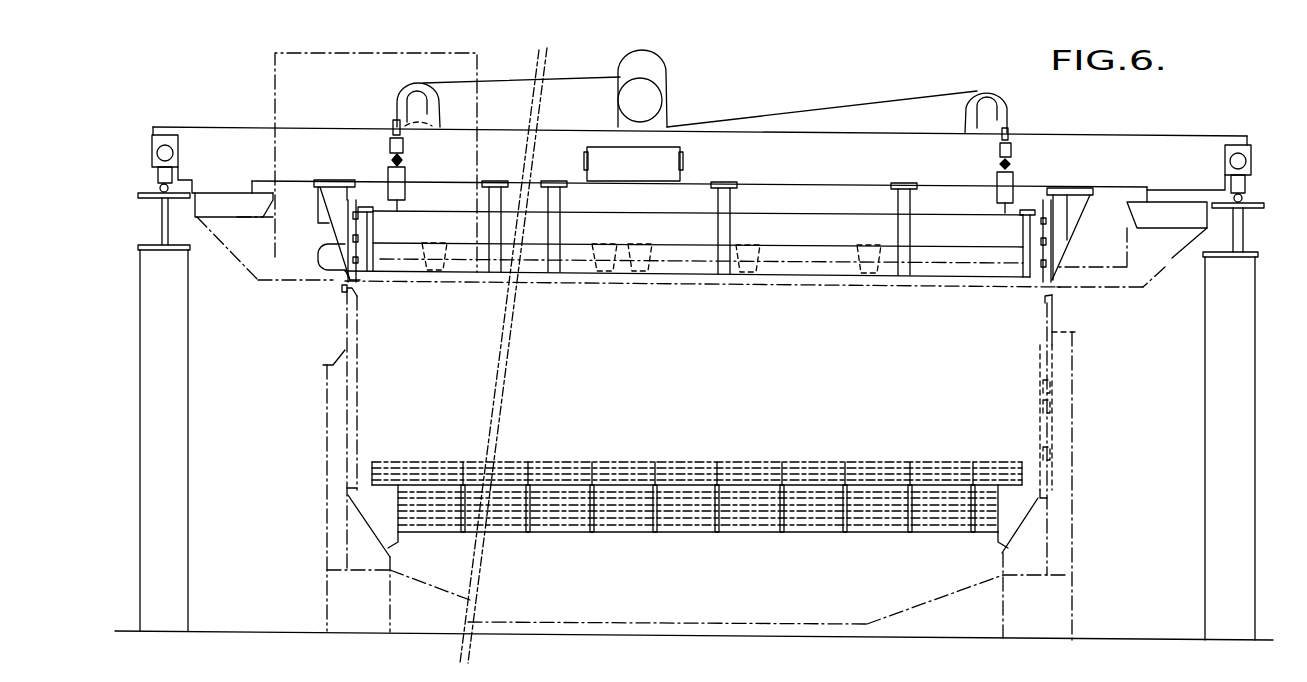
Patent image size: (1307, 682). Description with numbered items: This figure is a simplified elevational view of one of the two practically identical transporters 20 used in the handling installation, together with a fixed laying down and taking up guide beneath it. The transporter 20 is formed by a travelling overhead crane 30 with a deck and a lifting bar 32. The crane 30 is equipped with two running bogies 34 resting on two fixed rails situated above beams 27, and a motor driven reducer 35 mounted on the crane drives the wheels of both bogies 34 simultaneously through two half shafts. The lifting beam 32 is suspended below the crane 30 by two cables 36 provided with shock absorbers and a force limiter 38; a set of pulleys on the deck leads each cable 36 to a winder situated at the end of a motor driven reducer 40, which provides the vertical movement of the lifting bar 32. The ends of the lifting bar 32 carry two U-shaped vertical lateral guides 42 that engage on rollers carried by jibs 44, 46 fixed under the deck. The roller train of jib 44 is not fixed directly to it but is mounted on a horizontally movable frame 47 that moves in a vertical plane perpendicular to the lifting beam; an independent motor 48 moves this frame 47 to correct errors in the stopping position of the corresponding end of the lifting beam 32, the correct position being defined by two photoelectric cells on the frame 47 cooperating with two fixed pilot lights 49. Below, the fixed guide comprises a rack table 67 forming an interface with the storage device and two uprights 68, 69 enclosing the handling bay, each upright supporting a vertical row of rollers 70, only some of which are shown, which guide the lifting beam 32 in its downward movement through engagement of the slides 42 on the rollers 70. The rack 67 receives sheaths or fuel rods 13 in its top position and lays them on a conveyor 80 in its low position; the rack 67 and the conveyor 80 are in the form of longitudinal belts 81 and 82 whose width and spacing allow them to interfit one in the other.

The sheaths or fuel rods 13 is at (692, 278).
The transporter 20 is at (815, 97).
The beams 27 is at (173, 397).
The travelling overhead crane 30 is at (288, 163).
The lifting bar 32 is at (582, 228).
The running bogies 34 is at (160, 187).
The motor driven reducer 35 is at (648, 167).
The cables 36 is at (395, 123).
The force limiter 38 is at (404, 175).
The motor driven reducer 40 is at (648, 102).
The vertical lateral guides 42 is at (358, 197).
The jib 44 is at (338, 198).
The jib 46 is at (1075, 200).
The horizontally movable frame 47 is at (317, 263).
The independent motor 48 is at (345, 273).
The fixed pilot lights 49 is at (342, 289).
The rack table 67 is at (793, 462).
The upright 68 is at (1058, 372).
The upright 69 is at (337, 398).
The rollers 70 is at (1040, 408).
The conveyor 80 is at (689, 536).
The longitudinal belts 81 is at (500, 513).
The longitudinal belts 82 is at (595, 463).